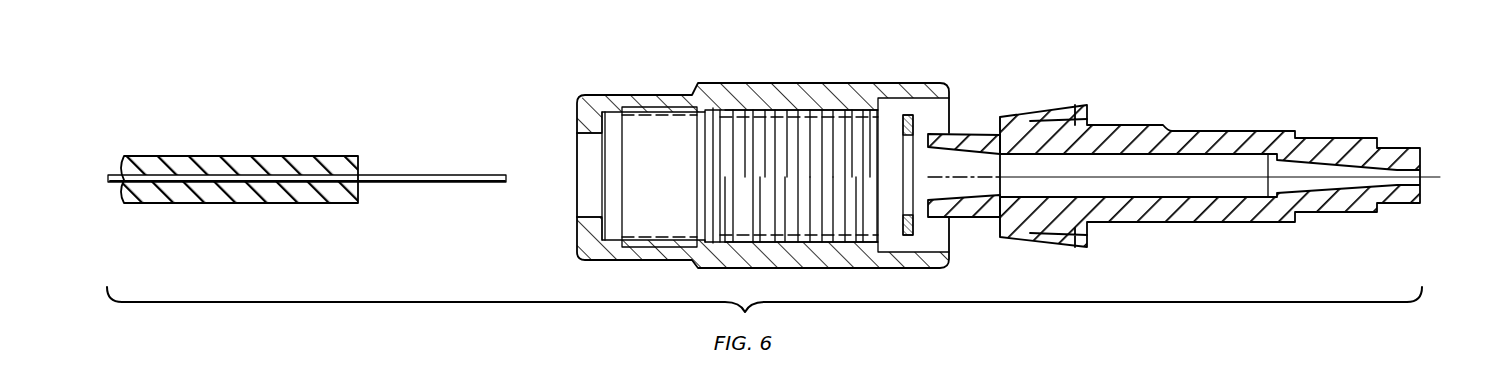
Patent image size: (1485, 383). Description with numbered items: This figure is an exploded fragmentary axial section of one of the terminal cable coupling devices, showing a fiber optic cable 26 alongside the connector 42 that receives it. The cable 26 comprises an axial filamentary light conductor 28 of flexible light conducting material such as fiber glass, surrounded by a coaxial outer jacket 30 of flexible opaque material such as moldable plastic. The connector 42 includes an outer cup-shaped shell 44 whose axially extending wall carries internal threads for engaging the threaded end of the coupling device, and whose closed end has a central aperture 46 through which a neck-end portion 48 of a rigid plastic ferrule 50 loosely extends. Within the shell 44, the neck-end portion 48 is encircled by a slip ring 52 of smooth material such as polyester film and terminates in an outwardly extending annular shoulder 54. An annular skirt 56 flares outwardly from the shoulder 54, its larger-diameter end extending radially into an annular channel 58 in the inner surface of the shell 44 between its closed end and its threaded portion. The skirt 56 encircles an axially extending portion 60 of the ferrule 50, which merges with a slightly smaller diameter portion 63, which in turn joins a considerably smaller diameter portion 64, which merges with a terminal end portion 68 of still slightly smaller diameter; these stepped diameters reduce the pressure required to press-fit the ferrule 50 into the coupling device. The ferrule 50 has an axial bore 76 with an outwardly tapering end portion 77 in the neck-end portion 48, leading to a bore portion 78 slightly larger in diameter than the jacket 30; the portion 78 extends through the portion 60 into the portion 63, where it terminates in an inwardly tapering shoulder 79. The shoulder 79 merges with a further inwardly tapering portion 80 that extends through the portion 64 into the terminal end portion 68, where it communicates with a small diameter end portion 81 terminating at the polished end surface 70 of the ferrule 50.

The fiber optic cable 26 is at (307, 189).
The axial filamentary light conductor 28 is at (358, 177).
The coaxial outer jacket 30 is at (310, 158).
The connector 42 is at (746, 173).
The outer cup-shaped shell 44 is at (650, 104).
The aperture 46 is at (580, 140).
The neck-end portion 48 is at (963, 143).
The ferrule 50 is at (1231, 162).
The slip ring 52 is at (902, 128).
The annular shoulder 54 is at (995, 116).
The annular skirt 56 is at (1055, 106).
The annular channel 58 is at (655, 244).
The axially extending portion 60 is at (1145, 135).
The slightly smaller diameter portion 63 is at (1252, 132).
The considerably smaller diameter portion 64 is at (1340, 142).
The terminal end portion 68 is at (1398, 152).
The polished end surface 70 is at (1422, 158).
The axial bore 76 is at (941, 195).
The outwardly tapering end portion 77 is at (977, 200).
The bore portion 78 is at (1122, 197).
The inwardly tapering shoulder 79 is at (1268, 196).
The inwardly tapering portion 80 is at (1340, 186).
The small diameter end portion 81 is at (1416, 183).